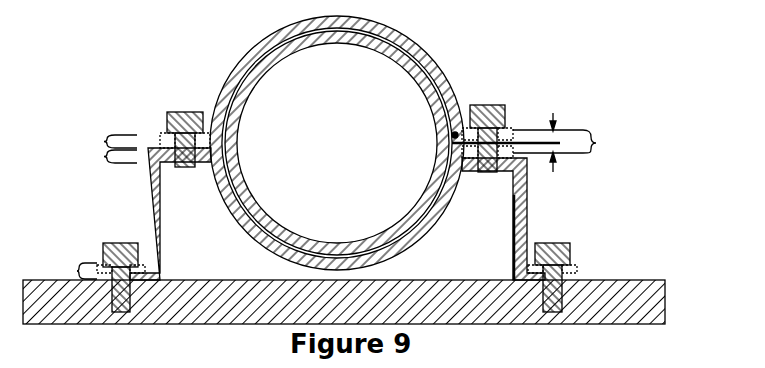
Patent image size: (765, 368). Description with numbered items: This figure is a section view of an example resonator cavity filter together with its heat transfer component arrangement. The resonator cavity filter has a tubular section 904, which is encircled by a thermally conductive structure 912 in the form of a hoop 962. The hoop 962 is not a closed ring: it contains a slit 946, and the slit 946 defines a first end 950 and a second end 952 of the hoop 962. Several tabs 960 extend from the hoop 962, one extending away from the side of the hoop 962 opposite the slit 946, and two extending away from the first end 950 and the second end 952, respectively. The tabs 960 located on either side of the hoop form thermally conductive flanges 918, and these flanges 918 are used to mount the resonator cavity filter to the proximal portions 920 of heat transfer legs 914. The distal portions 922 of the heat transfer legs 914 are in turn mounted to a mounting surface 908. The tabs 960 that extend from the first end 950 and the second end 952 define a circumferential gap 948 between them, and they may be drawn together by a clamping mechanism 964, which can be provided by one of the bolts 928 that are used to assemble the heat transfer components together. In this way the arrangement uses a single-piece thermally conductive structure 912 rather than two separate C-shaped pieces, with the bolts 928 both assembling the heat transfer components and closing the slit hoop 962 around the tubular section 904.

The tubular section 904 is at (238, 98).
The mounting surface 908 is at (635, 297).
The thermally conductive structure 912 is at (307, 143).
The heat transfer legs 914 is at (154, 182).
The thermally conductive flanges 918 is at (351, 141).
The proximal portions 920 is at (103, 156).
The distal portions 922 is at (308, 272).
The bolts 928 is at (391, 173).
The slit 946 is at (445, 143).
The circumferential gap 948 is at (563, 152).
The first end 950 is at (456, 133).
The second end 952 is at (520, 238).
The tabs 960 is at (165, 143).
The hoop 962 is at (245, 68).
The clamping mechanism 964 is at (485, 113).